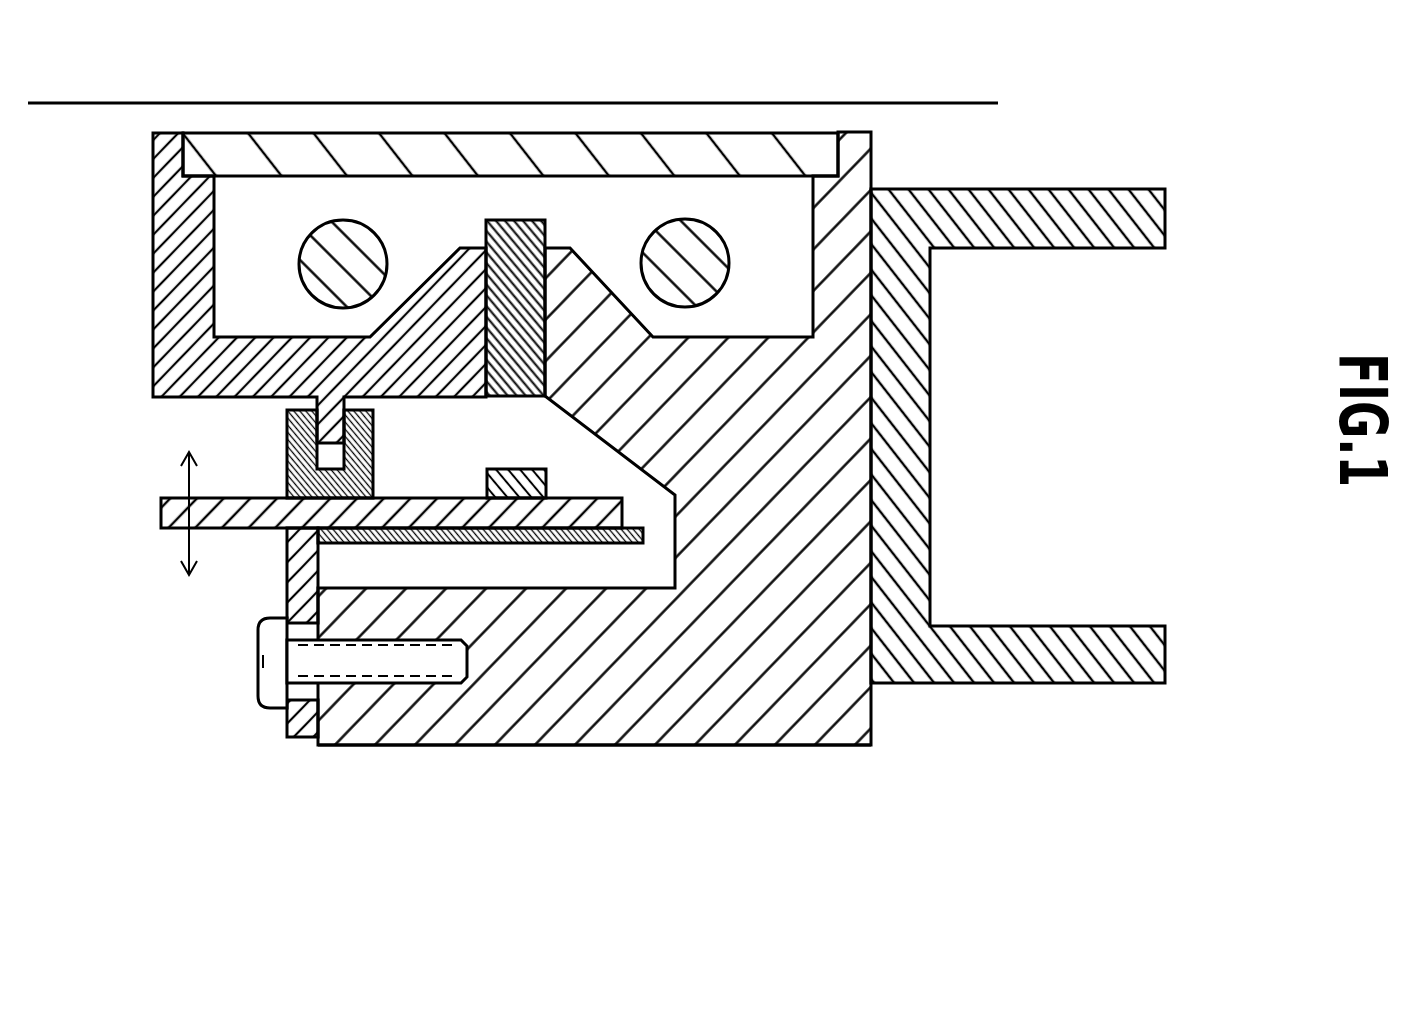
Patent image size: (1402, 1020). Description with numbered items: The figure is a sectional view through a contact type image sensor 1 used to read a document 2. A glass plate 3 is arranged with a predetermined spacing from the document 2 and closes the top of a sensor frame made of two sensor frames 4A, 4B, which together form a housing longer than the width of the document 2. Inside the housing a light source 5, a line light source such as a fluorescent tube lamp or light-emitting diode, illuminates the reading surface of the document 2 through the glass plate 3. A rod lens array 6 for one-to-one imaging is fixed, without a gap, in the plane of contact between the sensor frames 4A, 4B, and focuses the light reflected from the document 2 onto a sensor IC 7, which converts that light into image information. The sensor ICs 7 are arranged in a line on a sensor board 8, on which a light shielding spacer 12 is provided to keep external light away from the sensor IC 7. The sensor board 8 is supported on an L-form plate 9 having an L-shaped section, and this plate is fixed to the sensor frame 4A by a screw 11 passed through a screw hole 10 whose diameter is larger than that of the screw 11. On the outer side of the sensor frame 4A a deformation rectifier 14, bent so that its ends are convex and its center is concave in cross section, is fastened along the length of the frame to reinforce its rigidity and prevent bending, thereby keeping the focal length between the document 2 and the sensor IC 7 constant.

The image sensor 1 is at (503, 758).
The document 2 is at (885, 103).
The glass plate 3 is at (697, 145).
The sensor frame 4A is at (873, 722).
The sensor frame 4B is at (163, 213).
The light source 5 is at (322, 240).
The rod lens array 6 is at (545, 232).
The sensor IC 7 is at (517, 469).
The sensor board 8 is at (168, 507).
The L-form plate 9 is at (287, 598).
The screw hole 10 is at (312, 738).
The screw 11 is at (258, 678).
The light shielding spacer 12 is at (287, 450).
The deformation rectifier 14 is at (1028, 626).